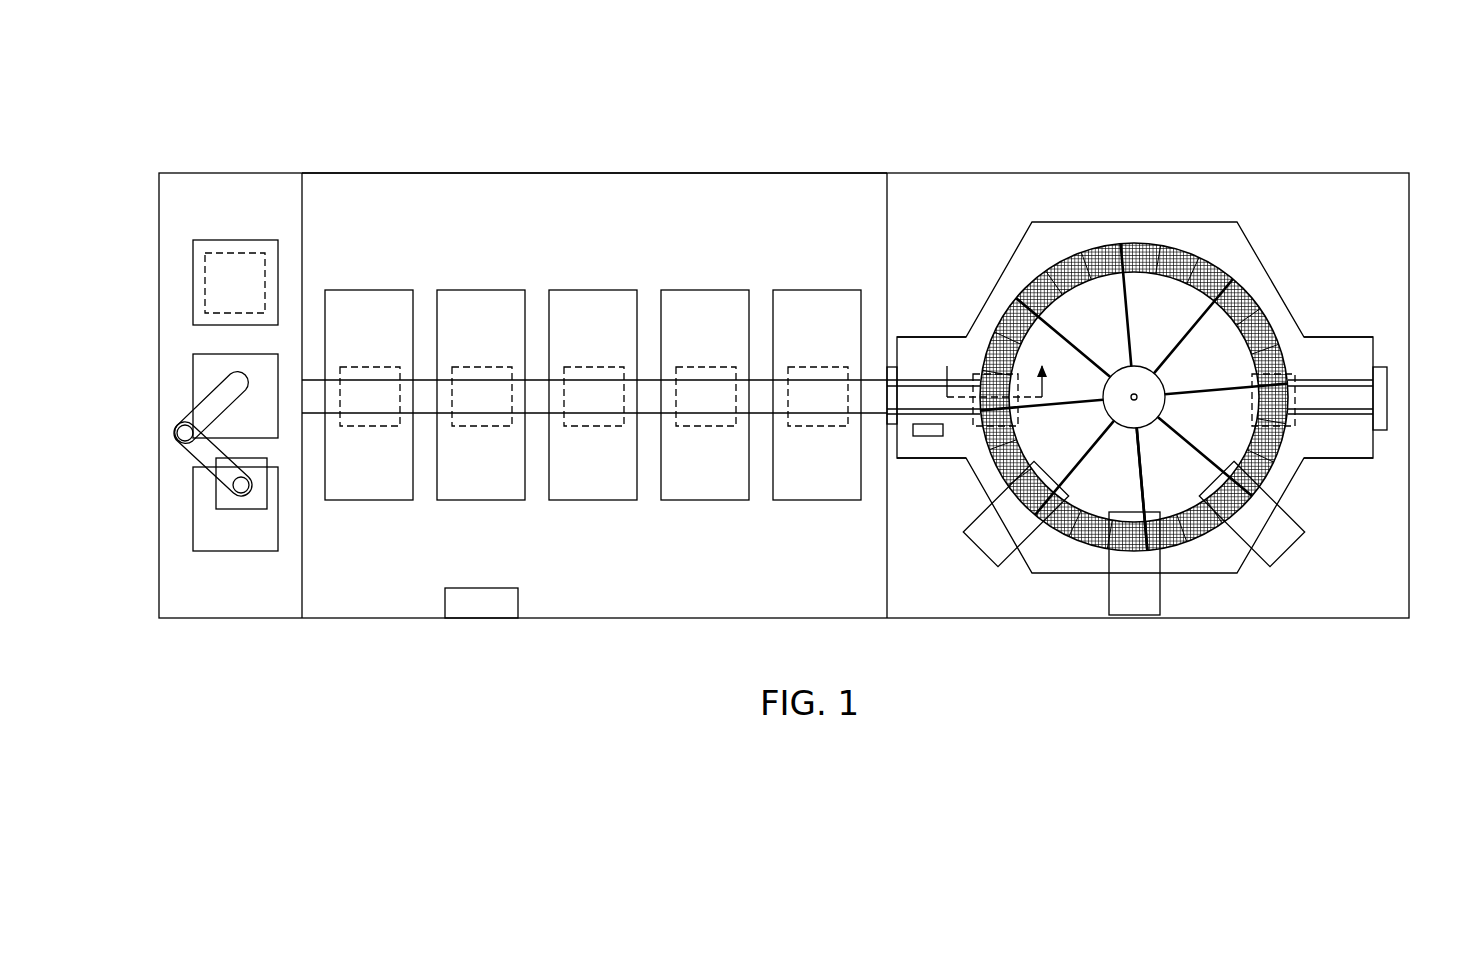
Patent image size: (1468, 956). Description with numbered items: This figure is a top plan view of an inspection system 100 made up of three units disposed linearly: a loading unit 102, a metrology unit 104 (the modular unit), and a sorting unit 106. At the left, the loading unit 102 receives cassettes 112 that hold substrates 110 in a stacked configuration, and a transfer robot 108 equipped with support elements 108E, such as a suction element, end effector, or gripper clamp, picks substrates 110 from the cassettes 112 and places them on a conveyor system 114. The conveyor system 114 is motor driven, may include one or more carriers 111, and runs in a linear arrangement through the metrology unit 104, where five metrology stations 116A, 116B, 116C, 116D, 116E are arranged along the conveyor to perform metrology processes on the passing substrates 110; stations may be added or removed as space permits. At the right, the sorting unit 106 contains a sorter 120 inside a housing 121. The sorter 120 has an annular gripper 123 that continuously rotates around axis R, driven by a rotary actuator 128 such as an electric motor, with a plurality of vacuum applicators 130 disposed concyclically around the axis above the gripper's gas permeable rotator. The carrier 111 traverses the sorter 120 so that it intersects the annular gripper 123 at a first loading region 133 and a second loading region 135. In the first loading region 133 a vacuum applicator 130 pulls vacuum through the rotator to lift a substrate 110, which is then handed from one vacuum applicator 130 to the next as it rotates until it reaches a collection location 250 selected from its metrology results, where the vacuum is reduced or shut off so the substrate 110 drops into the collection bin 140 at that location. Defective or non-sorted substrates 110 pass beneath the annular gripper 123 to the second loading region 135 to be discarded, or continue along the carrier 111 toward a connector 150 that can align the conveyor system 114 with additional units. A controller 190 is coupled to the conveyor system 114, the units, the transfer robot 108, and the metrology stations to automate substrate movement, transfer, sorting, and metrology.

The inspection system 100 is at (745, 96).
The loading unit 102 is at (226, 173).
The metrology unit 104 is at (540, 173).
The sorting unit 106 is at (1070, 173).
The transfer robot 108 is at (182, 448).
The support elements 108E is at (248, 509).
The substrates 110 is at (262, 253).
The carrier 111 is at (925, 380).
The cassettes 112 is at (193, 258).
The conveyor system 114 is at (651, 413).
The metrology station 116A is at (355, 290).
The metrology station 116B is at (467, 290).
The metrology station 116C is at (579, 290).
The metrology station 116D is at (691, 290).
The metrology station 116E is at (803, 290).
The sorter 120 is at (1170, 401).
The housing 121 is at (978, 291).
The annular gripper 123 is at (1078, 251).
The rotary actuator 128 is at (1136, 394).
The vacuum applicators 130 is at (1182, 253).
The first loading region 133 is at (980, 420).
The second loading region 135 is at (1300, 415).
The collection bin 140 is at (1000, 545).
The connector 150 is at (1387, 400).
The controller 190 is at (518, 597).
The collection location 250 is at (1236, 569).